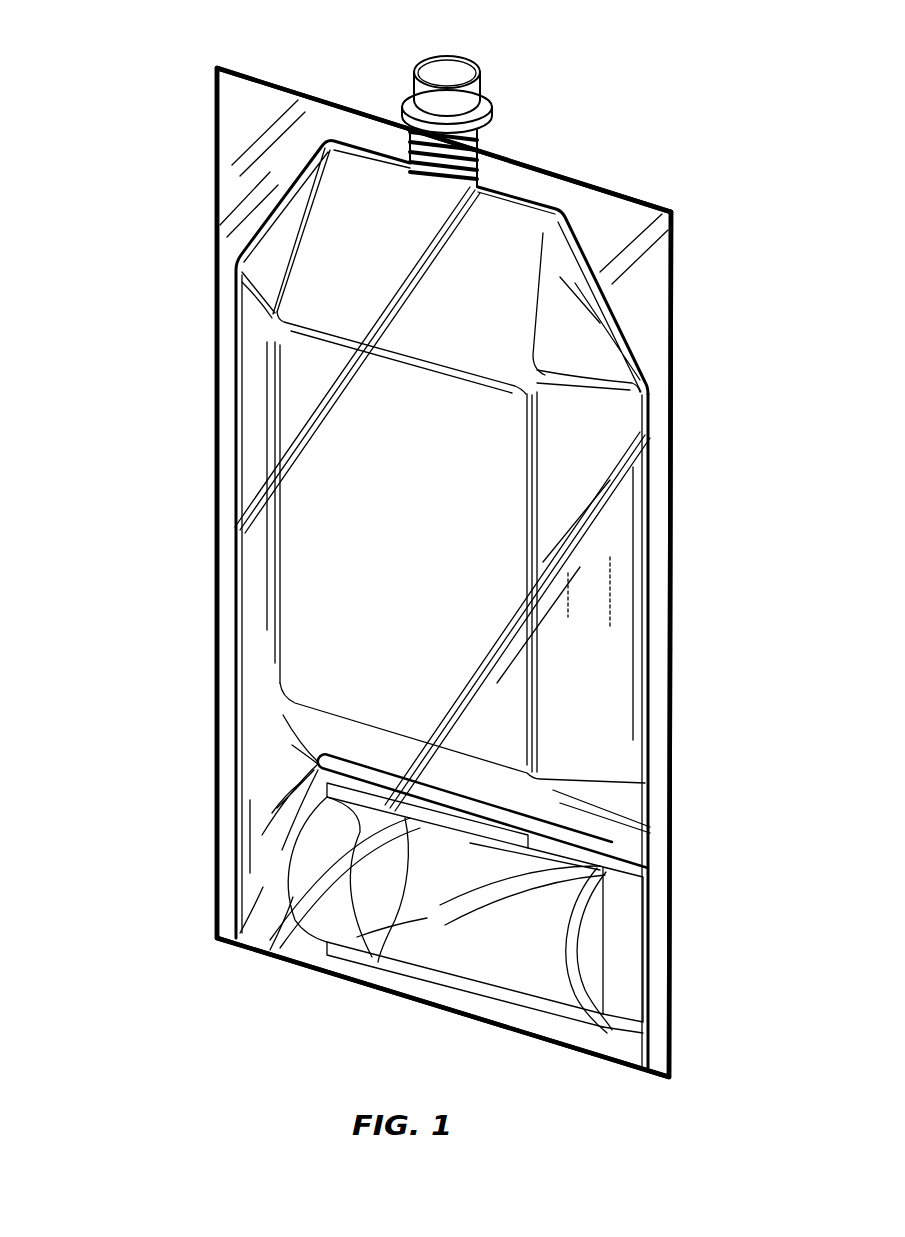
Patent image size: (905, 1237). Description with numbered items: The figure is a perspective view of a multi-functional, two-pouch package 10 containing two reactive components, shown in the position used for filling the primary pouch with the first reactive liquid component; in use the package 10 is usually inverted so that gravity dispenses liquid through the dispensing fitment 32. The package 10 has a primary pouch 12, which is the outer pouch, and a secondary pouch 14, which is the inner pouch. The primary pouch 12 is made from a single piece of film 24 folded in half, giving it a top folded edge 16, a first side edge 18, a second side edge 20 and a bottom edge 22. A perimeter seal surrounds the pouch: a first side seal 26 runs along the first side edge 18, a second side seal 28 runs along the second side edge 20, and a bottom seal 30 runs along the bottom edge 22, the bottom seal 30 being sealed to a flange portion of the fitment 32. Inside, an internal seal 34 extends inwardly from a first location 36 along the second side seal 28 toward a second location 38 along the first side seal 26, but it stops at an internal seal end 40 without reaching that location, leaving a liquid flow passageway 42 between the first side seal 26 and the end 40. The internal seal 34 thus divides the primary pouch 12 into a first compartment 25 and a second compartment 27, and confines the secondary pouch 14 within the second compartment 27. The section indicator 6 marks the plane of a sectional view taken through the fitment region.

The section line of FIG. 6 is at (448, 52).
The package 10 is at (740, 112).
The primary pouch 12 is at (565, 267).
The secondary pouch 14 is at (408, 920).
The top folded edge 16 is at (597, 1060).
The first side edge 18 is at (215, 668).
The second side edge 20 is at (670, 587).
The bottom edge 22 is at (322, 98).
The film 24 is at (377, 523).
The first compartment 25 is at (622, 422).
The first side seal 26 is at (222, 588).
The second compartment 27 is at (533, 962).
The second side seal 28 is at (658, 708).
The bottom seal 30 is at (355, 122).
The dispensing fitment 32 is at (480, 128).
The internal seal 34 is at (600, 847).
The first location 36 is at (660, 865).
The second location 38 is at (223, 772).
The internal seal end 40 is at (320, 762).
The liquid flow passageway 42 is at (272, 760).